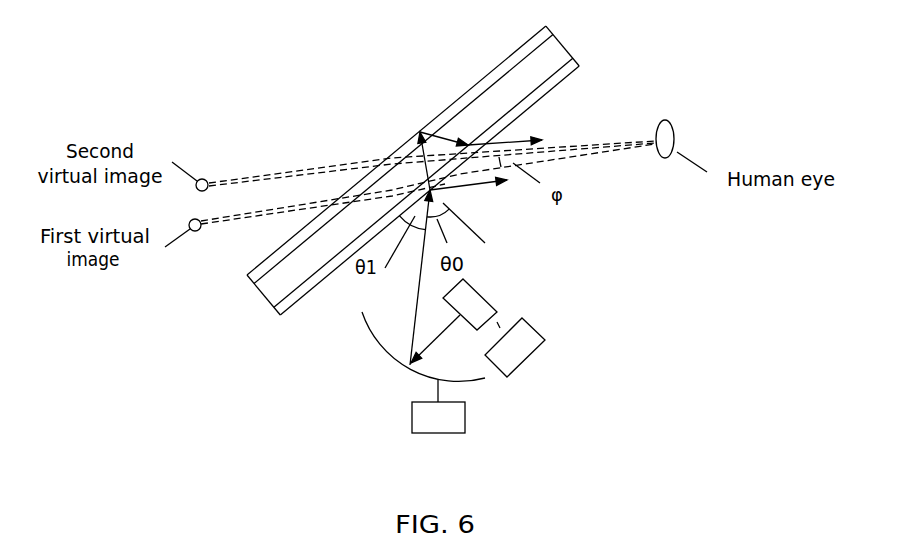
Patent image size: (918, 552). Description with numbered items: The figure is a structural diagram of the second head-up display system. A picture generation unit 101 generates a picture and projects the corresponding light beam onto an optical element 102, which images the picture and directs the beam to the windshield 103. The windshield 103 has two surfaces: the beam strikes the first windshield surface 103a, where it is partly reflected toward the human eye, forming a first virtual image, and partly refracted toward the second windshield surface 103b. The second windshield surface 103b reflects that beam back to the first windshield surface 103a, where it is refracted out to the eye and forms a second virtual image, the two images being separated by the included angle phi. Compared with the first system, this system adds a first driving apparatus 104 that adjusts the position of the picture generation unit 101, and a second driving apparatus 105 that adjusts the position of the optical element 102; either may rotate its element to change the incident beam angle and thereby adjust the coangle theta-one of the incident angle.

The picture generation unit 101 is at (480, 295).
The optical element 102 is at (388, 357).
The windshield 103 is at (448, 160).
The first windshield surface 103a is at (563, 78).
The second windshield surface 103b is at (498, 65).
The first driving apparatus 104 is at (535, 327).
The second driving apparatus 105 is at (435, 433).